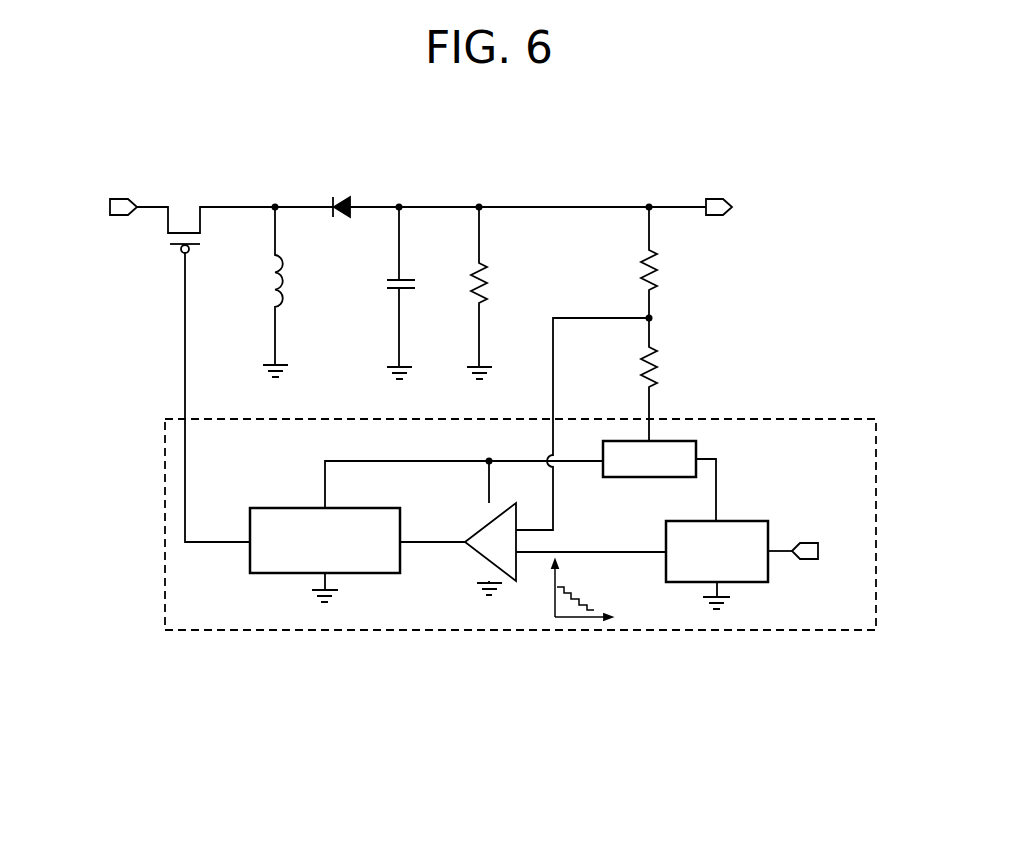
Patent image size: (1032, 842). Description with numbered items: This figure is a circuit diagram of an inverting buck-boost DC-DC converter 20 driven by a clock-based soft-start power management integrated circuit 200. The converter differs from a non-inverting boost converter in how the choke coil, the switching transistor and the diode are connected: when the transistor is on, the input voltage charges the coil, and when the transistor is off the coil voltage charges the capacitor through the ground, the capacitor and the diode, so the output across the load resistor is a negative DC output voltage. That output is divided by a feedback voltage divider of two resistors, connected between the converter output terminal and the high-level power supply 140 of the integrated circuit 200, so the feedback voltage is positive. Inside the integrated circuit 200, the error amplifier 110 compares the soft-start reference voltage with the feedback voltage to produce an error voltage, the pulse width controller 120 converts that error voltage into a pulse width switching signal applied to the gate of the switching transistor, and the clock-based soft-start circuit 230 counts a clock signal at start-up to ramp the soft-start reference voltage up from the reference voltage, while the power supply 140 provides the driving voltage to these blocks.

The inverting buck-boost DC-DC converter 20 is at (477, 141).
The PMIC 200 is at (165, 527).
The pulse width controller 120 is at (283, 573).
The error amplifier 110 is at (466, 546).
The power supply 140 is at (696, 447).
The clock-based soft-start circuit 230 is at (755, 582).